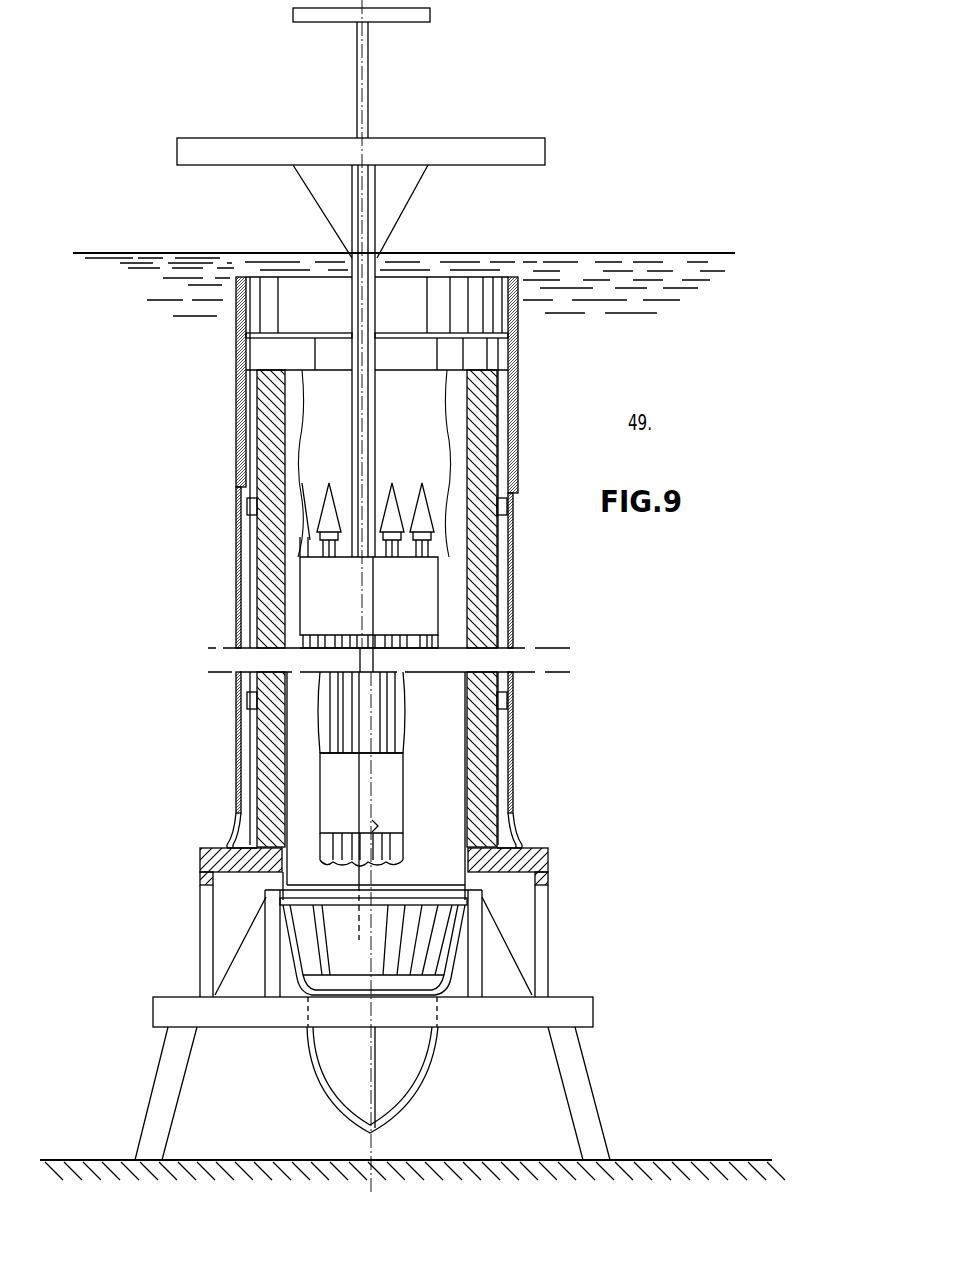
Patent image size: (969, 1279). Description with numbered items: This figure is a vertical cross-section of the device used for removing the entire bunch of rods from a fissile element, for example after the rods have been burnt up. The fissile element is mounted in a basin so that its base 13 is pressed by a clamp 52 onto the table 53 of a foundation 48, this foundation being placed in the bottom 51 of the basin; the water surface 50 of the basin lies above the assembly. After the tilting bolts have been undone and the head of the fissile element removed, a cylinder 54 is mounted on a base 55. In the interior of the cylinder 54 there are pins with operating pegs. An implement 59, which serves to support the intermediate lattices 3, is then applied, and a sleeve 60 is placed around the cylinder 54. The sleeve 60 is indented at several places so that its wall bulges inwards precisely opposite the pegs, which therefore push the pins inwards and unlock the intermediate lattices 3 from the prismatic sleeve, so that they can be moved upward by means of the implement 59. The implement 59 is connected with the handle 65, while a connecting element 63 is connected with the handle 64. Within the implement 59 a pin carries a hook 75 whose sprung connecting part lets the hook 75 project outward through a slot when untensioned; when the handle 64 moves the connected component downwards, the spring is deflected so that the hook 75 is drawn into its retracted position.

The intermediate lattices 3 is at (403, 597).
The base 13 is at (412, 940).
The foundation 48 is at (585, 1068).
The water surface 50 is at (630, 255).
The bottom 51 is at (668, 1160).
The clamp 52 is at (513, 982).
The table 53 is at (595, 1010).
The cylinder 54 is at (270, 542).
The base 55 is at (550, 853).
The implement 59 is at (365, 435).
The sleeve 60 is at (514, 432).
The connecting element 63 is at (367, 100).
The handle 64 is at (418, 18).
The handle 65 is at (515, 138).
The hook 75 is at (375, 635).